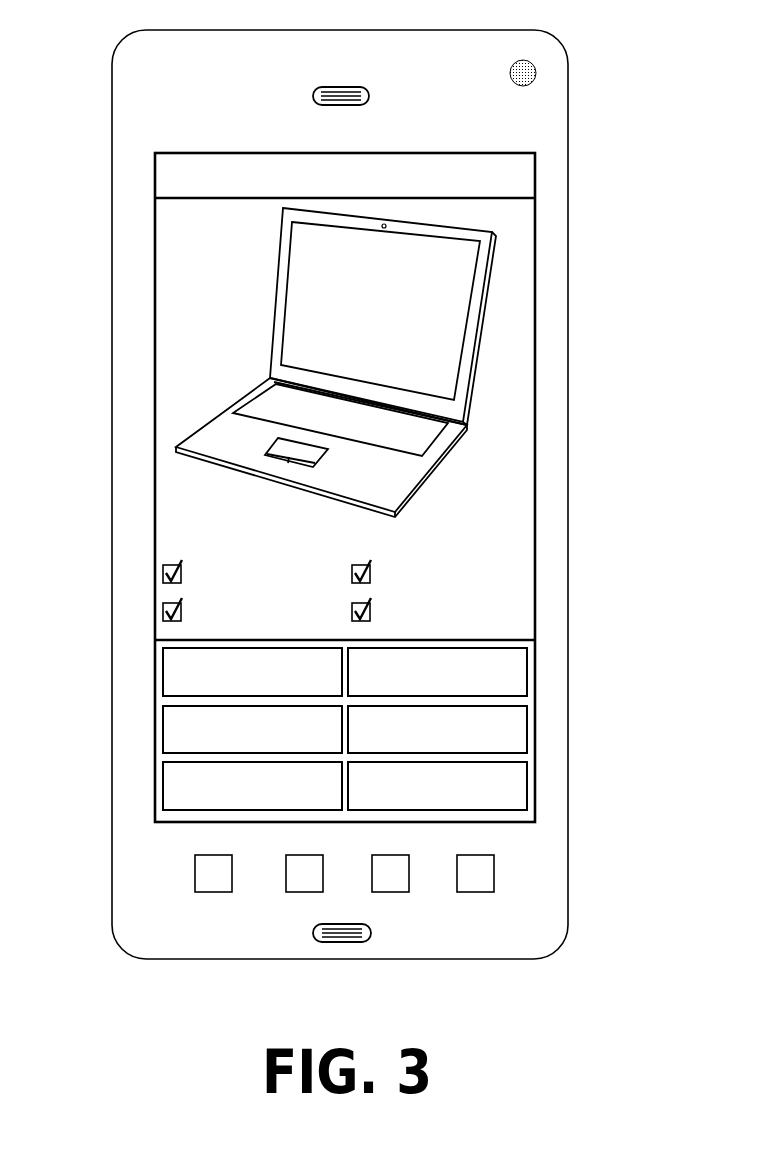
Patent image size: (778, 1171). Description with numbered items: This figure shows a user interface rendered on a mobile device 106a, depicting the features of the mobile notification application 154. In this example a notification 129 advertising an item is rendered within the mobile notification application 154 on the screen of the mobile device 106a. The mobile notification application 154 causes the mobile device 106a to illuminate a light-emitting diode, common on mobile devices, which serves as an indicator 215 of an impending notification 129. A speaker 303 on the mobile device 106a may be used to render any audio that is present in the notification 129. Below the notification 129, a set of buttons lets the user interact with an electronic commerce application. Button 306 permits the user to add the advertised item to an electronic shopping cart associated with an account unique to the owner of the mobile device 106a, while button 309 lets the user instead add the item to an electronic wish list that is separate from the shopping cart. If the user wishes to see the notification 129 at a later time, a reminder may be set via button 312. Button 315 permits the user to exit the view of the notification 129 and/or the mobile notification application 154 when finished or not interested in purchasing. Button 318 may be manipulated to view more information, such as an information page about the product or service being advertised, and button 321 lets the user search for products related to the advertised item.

The mobile device 106a is at (568, 117).
The indicator 215 is at (534, 64).
The speaker 303 is at (366, 92).
The mobile notification application 154 is at (445, 177).
The notification 129 is at (497, 447).
The button 306 is at (163, 673).
The button 309 is at (527, 673).
The button 312 is at (163, 729).
The button 315 is at (527, 729).
The button 318 is at (163, 786).
The button 321 is at (527, 786).